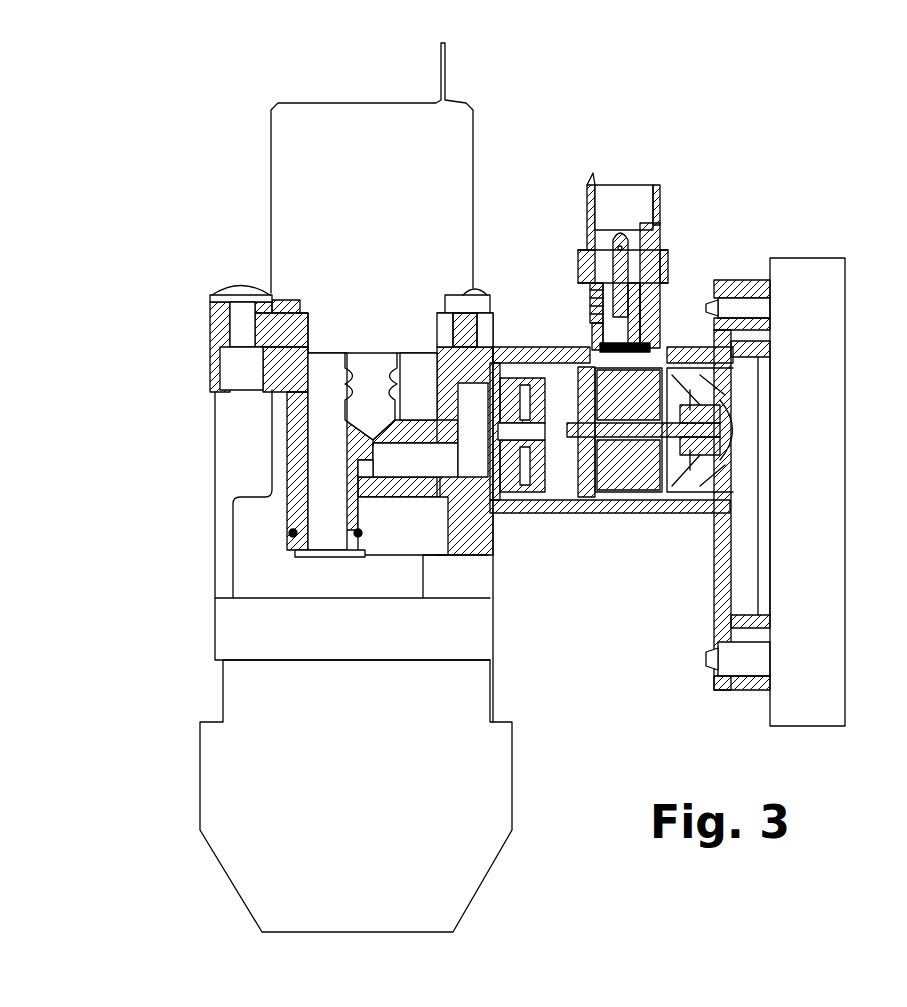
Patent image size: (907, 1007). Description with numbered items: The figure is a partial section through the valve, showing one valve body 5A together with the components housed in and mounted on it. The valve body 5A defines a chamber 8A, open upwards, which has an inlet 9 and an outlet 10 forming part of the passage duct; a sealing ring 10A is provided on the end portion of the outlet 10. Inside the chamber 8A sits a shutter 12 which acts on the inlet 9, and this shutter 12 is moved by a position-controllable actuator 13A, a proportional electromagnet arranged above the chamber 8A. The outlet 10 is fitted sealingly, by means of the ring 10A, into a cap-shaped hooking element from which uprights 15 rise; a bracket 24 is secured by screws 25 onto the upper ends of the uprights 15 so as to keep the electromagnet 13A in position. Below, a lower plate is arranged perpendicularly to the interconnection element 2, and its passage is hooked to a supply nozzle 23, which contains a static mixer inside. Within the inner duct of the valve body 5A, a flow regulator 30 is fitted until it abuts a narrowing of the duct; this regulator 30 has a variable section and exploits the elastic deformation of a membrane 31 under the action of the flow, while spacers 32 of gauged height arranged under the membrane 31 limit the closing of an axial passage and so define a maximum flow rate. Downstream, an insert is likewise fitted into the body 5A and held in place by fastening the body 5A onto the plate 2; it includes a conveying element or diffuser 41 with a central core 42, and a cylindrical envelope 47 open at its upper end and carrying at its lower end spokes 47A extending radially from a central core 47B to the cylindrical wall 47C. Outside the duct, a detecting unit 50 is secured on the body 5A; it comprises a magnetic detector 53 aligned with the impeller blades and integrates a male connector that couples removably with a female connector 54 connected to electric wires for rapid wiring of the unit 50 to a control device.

The interconnection element 2 is at (784, 254).
The valve body 5A is at (205, 367).
The chamber 8A is at (418, 375).
The inlet 9 is at (374, 450).
The outlet 10 is at (317, 553).
The sealing ring 10A is at (290, 534).
The shutter 12 is at (347, 400).
The position-controllable actuator 13A is at (298, 147).
The uprights 15 is at (218, 460).
The supply nozzle 23 is at (230, 878).
The bracket 24 is at (212, 303).
The screws 25 is at (245, 284).
The flow regulator 30 is at (486, 455).
The membrane 31 is at (514, 490).
The spacers 32 is at (510, 392).
The conveying element or diffuser 41 is at (736, 492).
The central core 42 is at (735, 430).
The cylindrical envelope 47 is at (570, 378).
The support elements or spokes 47A is at (582, 473).
The central core 47B is at (568, 520).
The cylindrical wall 47C is at (631, 495).
The detecting unit 50 is at (665, 325).
The magnetic detector 53 is at (652, 345).
The female connector 54 is at (656, 205).